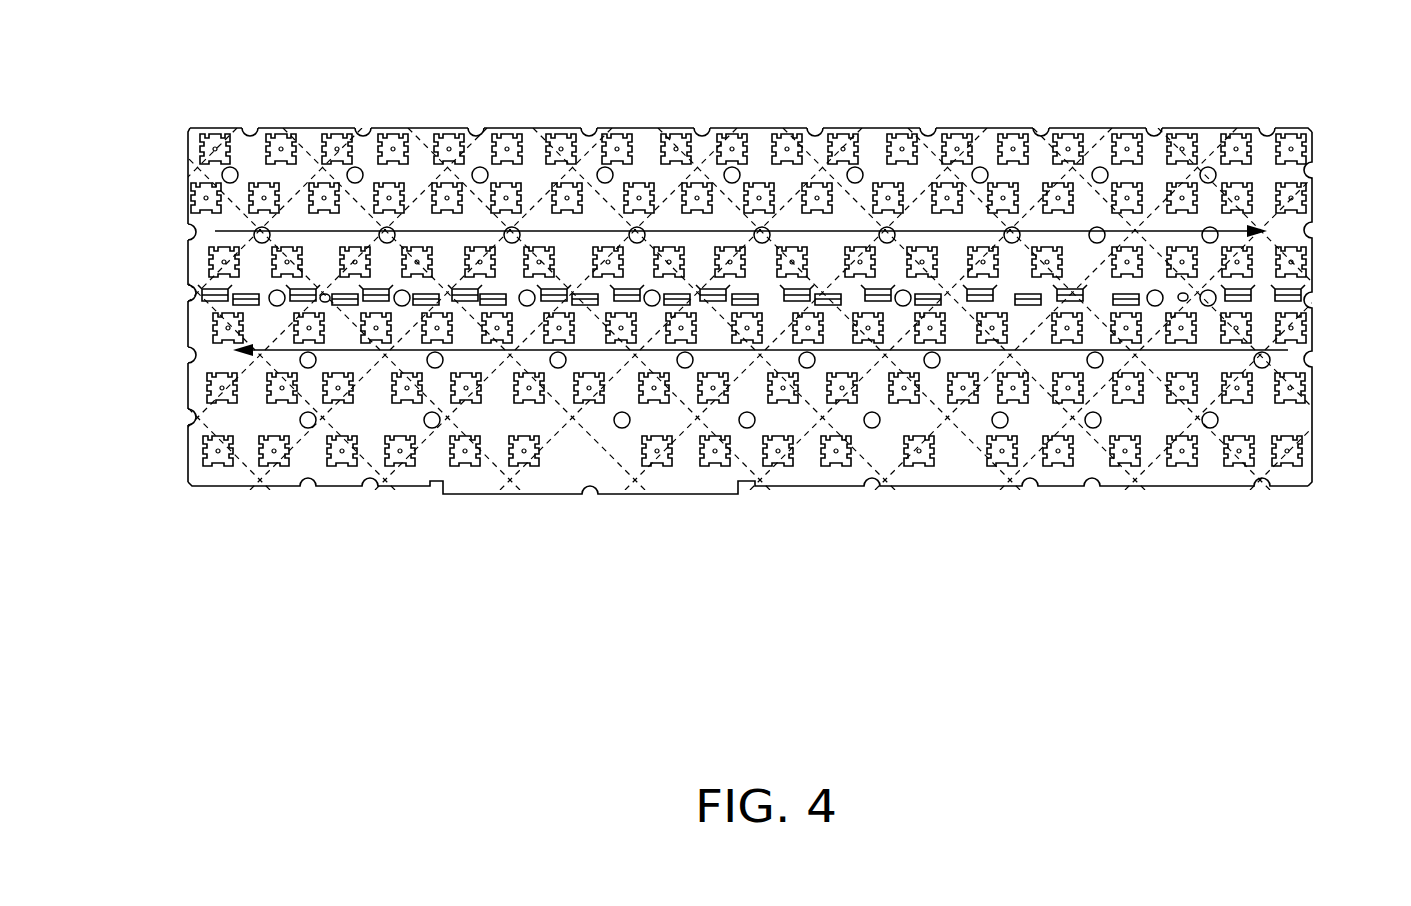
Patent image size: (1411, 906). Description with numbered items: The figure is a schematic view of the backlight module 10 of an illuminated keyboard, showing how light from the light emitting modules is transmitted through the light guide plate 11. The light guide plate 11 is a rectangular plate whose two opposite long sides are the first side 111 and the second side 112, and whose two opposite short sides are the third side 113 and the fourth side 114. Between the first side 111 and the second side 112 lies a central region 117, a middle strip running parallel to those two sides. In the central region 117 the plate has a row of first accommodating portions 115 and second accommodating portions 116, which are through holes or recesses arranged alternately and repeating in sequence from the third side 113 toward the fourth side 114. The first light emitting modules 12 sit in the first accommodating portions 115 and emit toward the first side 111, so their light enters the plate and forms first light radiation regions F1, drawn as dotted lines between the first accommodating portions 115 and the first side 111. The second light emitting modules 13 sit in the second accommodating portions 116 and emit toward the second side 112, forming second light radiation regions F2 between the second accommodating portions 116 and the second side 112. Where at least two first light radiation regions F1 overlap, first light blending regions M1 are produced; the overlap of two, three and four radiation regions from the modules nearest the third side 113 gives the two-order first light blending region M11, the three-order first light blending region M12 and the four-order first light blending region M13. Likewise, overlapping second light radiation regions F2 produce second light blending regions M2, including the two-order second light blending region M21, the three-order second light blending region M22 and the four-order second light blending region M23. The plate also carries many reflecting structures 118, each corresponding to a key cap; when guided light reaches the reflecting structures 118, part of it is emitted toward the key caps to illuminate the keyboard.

The backlight module 10 is at (232, 80).
The light guide plate 11 is at (648, 128).
The first side 111 is at (725, 130).
The second side 112 is at (898, 495).
The third side 113 is at (188, 200).
The fourth side 114 is at (1315, 155).
The first accommodating portions 115 is at (1282, 276).
The second accommodating portions 116 is at (1300, 322).
The central region 117 is at (172, 265).
The reflecting structures 118 is at (545, 130).
The first light emitting modules 12 is at (213, 293).
The second light emitting modules 13 is at (242, 306).
The first light radiation regions F1 is at (1292, 232).
The second light radiation regions F2 is at (1292, 350).
The first light blending regions M1 is at (708, 163).
The two-order first light blending region M11 is at (192, 176).
The three-order first light blending region M12 is at (240, 128).
The four-order first light blending region M13 is at (473, 137).
The second light blending regions M2 is at (723, 442).
The two-order second light blending region M21 is at (212, 420).
The three-order second light blending region M22 is at (222, 470).
The four-order second light blending region M23 is at (555, 440).